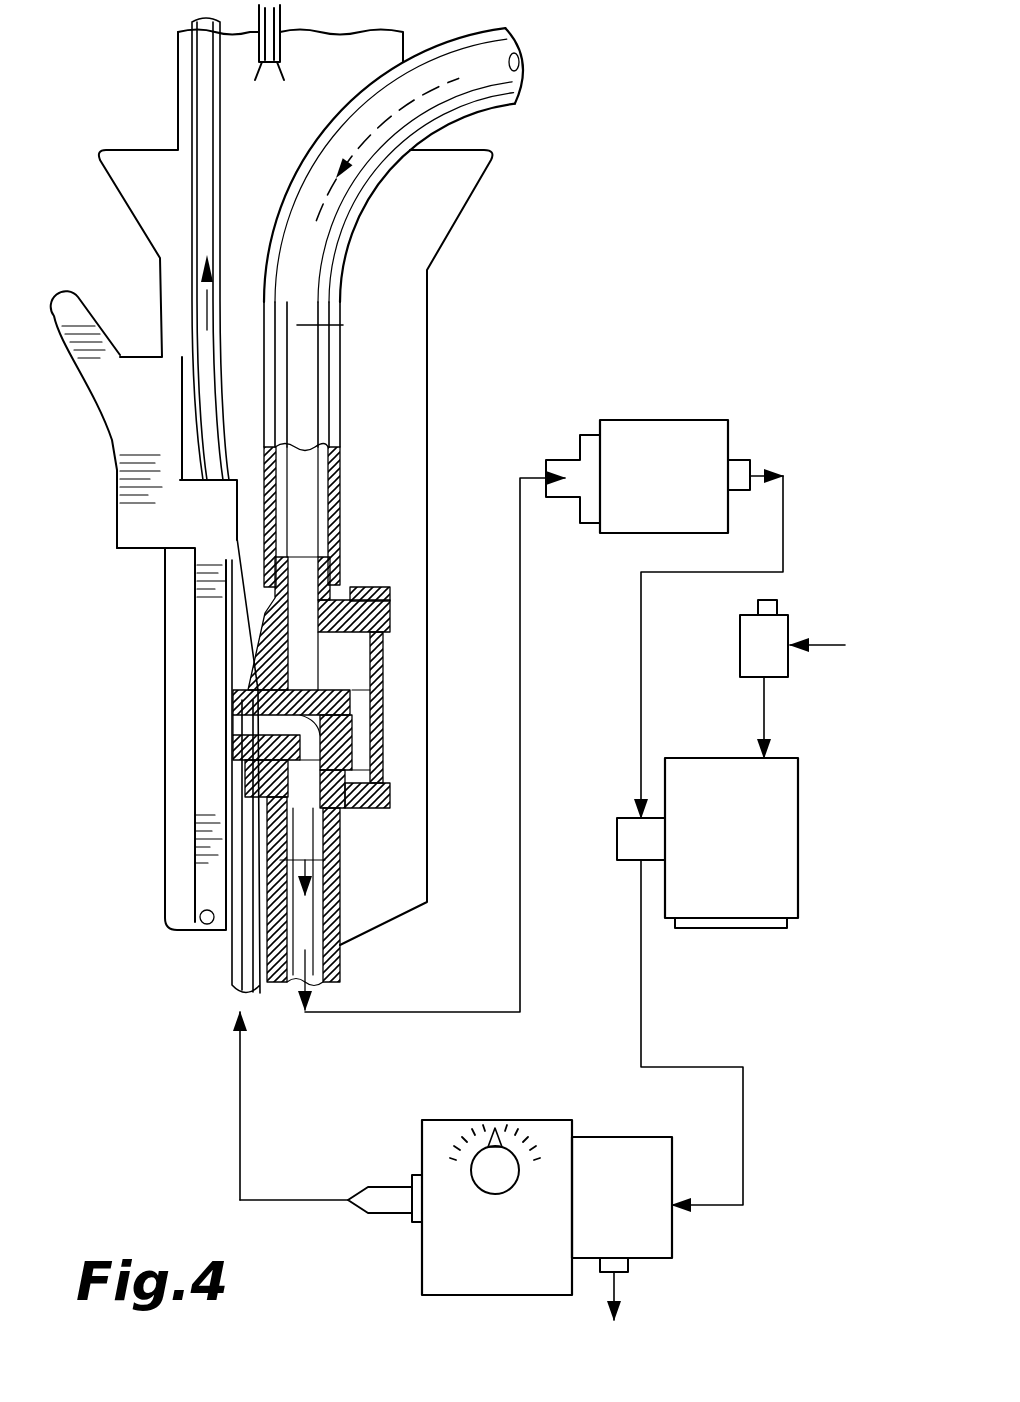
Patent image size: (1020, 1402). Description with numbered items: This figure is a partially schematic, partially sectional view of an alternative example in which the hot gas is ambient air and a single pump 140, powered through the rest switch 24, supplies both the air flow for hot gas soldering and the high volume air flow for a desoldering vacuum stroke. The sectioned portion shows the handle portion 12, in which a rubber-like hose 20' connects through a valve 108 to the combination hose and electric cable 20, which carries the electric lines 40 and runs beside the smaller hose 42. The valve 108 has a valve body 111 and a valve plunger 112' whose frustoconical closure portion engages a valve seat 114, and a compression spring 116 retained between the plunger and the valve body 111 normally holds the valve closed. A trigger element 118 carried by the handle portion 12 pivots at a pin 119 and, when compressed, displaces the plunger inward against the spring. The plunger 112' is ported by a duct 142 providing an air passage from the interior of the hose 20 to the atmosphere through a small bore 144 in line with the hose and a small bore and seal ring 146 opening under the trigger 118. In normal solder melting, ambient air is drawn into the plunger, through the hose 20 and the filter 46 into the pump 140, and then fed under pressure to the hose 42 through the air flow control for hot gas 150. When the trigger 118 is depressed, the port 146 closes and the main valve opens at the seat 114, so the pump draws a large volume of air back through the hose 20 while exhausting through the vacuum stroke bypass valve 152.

The handle portion 12 is at (462, 230).
The combination hose and electric cable 20 is at (416, 745).
The rubber-like hose 20' is at (402, 307).
The rest switch 24 is at (740, 648).
The electric lines 40 is at (282, 68).
The hose 42 is at (222, 133).
The filter 46 is at (683, 503).
The valve 108 is at (297, 697).
The valve body 111 is at (380, 632).
The valve plunger 112' is at (381, 670).
The valve seat 114 is at (340, 810).
The compression spring 116 is at (368, 758).
The trigger element 118 is at (108, 443).
The pin 119 is at (206, 911).
The pump 140 is at (752, 872).
The duct 142 is at (255, 745).
The small bore 144 is at (262, 780).
The small bore and seal ring 146 is at (230, 705).
The air flow control for hot gas 150 is at (505, 1120).
The vacuum stroke bypass valve 152 is at (610, 1137).